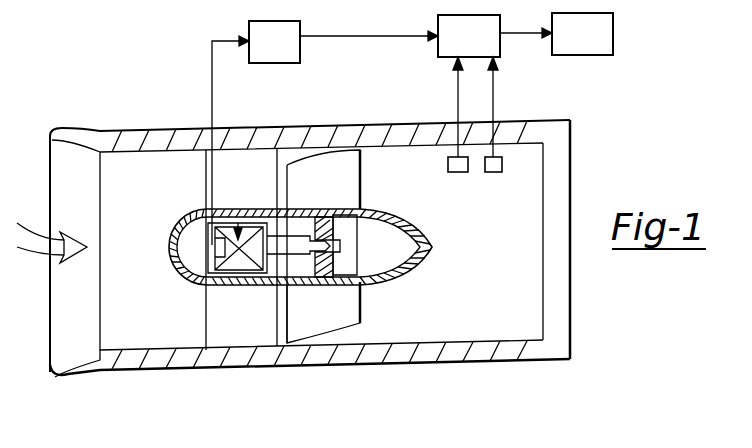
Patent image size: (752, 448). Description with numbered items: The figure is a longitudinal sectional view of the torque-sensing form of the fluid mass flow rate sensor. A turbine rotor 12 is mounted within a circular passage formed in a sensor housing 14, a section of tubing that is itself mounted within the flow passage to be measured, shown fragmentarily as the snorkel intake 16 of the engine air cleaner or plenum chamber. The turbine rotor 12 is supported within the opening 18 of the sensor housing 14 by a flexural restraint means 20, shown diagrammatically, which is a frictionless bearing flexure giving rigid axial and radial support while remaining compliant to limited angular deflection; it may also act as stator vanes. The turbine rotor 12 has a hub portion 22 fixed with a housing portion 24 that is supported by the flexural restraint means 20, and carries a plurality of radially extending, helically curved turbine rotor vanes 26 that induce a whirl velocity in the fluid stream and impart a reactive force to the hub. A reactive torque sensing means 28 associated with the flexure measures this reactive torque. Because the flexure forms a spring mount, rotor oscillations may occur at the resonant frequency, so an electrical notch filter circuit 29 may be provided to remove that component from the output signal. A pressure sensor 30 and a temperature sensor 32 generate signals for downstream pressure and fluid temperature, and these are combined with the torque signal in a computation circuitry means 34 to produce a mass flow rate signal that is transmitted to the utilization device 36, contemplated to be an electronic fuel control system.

The turbine rotor 12 is at (268, 263).
The sensor housing 14 is at (511, 346).
The snorkel intake 16 is at (563, 122).
The opening 18 is at (463, 309).
The flexural restraint means 20 is at (238, 223).
The hub portion 22 is at (330, 290).
The housing portion 24 is at (172, 262).
The turbine rotor vanes 26 is at (302, 312).
The reactive torque sensing means 28 is at (207, 285).
The electrical notch filter circuit 29 is at (262, 57).
The pressure sensor 30 is at (452, 157).
The temperature sensor 32 is at (497, 157).
The computation circuitry means 34 is at (455, 52).
The utilization device 36 is at (569, 50).